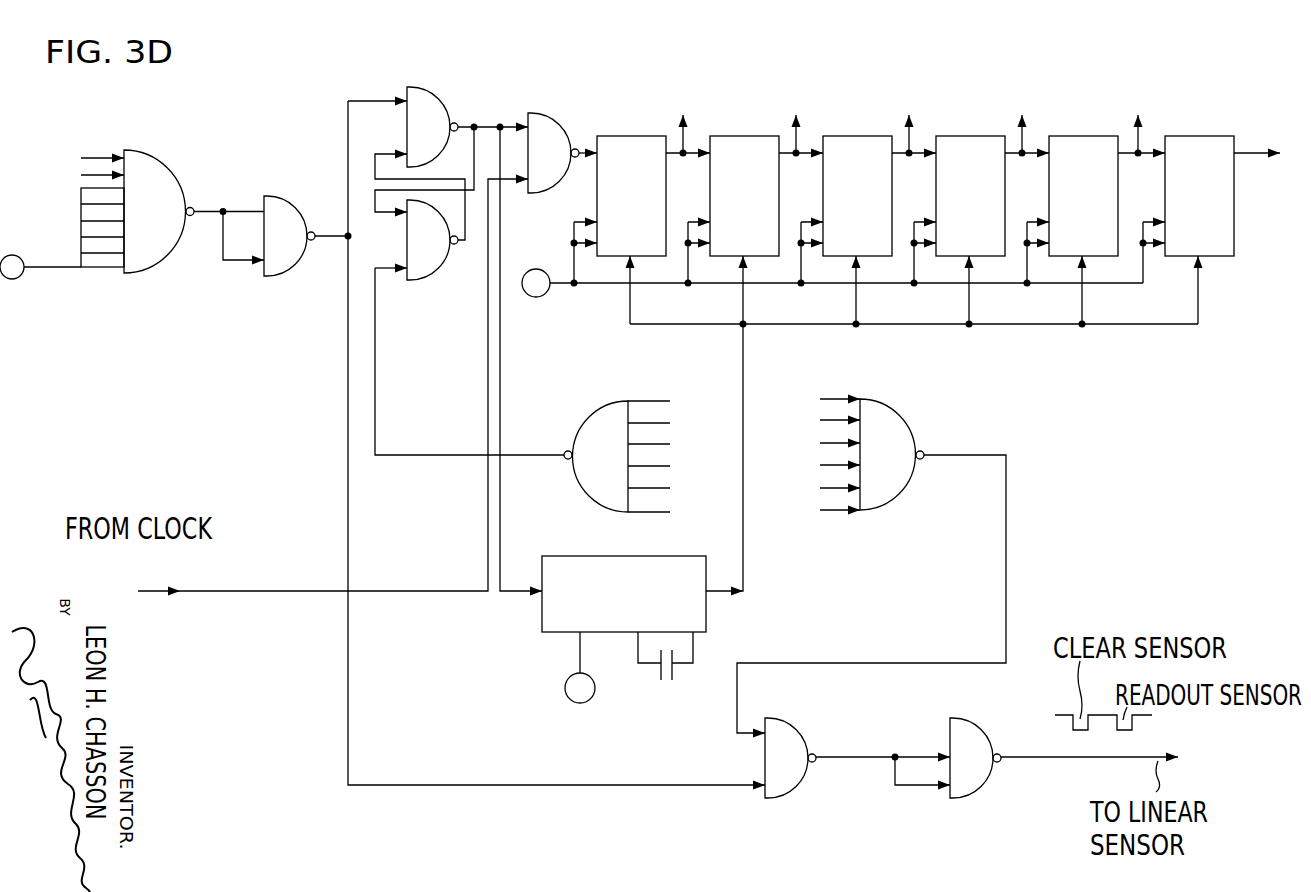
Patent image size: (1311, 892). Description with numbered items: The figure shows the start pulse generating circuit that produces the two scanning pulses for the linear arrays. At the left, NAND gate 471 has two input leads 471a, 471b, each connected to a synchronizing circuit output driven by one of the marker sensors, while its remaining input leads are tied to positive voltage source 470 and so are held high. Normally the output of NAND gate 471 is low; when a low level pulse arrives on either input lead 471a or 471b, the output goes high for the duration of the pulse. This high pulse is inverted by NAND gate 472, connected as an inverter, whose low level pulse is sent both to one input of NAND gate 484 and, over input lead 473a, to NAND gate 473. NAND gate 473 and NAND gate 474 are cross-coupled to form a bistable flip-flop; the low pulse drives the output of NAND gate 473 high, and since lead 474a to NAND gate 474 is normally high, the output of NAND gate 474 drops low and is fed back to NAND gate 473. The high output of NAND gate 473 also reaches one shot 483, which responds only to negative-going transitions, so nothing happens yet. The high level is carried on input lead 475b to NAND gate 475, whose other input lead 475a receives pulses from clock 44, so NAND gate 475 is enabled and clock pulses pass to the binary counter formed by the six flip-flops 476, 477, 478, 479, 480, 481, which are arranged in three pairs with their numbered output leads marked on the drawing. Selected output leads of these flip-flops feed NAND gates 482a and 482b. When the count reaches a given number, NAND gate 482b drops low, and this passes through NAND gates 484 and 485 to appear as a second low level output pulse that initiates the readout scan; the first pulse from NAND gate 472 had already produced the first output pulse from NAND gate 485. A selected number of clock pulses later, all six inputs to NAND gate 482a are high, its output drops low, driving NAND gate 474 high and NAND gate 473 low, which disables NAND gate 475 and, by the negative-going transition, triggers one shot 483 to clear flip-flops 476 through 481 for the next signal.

The clock 44 is at (158, 590).
The positive voltage source 470 is at (18, 280).
The NAND gate 471 is at (174, 175).
The input lead 471a is at (90, 158).
The input lead 471b is at (81, 176).
The NAND gate 472 is at (272, 196).
The NAND gate 473 is at (443, 112).
The input lead 473a is at (369, 99).
The NAND gate 474 is at (437, 262).
The input lead 474a is at (392, 272).
The NAND gate 475 is at (564, 130).
The input lead 475a is at (220, 590).
The input lead 475b is at (508, 127).
The flip-flop 476 is at (641, 136).
The flip-flop 477 is at (735, 136).
The flip-flop 478 is at (850, 136).
The flip-flop 479 is at (962, 136).
The flip-flop 480 is at (1075, 136).
The flip-flop 481 is at (1182, 136).
The NAND gate 482a is at (592, 424).
The NAND gate 482b is at (912, 430).
The one shot 483 is at (542, 608).
The NAND gate 484 is at (790, 783).
The NAND gate 485 is at (975, 783).